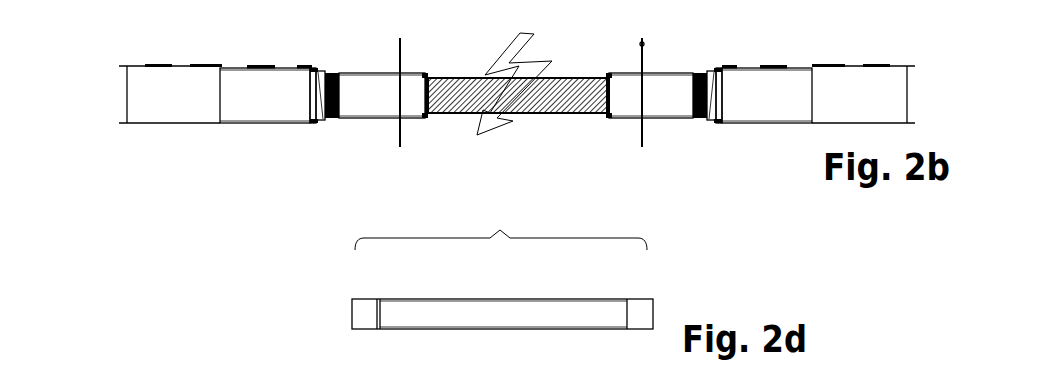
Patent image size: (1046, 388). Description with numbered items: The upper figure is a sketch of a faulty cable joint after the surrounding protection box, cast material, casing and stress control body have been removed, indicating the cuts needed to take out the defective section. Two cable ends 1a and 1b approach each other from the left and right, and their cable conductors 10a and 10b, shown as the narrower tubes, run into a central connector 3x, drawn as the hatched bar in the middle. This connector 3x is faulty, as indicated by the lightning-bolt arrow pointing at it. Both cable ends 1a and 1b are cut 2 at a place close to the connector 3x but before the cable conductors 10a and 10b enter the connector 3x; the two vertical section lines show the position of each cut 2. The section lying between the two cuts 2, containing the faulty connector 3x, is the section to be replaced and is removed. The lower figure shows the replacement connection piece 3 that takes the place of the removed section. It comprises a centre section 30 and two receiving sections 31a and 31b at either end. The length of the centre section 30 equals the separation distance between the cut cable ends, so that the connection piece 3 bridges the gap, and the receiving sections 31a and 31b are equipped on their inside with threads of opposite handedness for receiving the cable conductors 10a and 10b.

In FIG. 2b, the cable end 1a is at (197, 98).
In FIG. 2b, the cable end 1b is at (736, 98).
In FIG. 2b, the cut 2 is at (400, 52).
In FIG. 2d, the connection piece 3 is at (502, 265).
In FIG. 2b, the connector 3x is at (553, 112).
In FIG. 2b, the cable conductor 10a is at (438, 112).
In FIG. 2b, the cable conductor 10b is at (595, 112).
In FIG. 2d, the centre section 30 is at (423, 308).
In FIG. 2d, the receiving section 31a is at (367, 308).
In FIG. 2d, the receiving section 31b is at (638, 313).